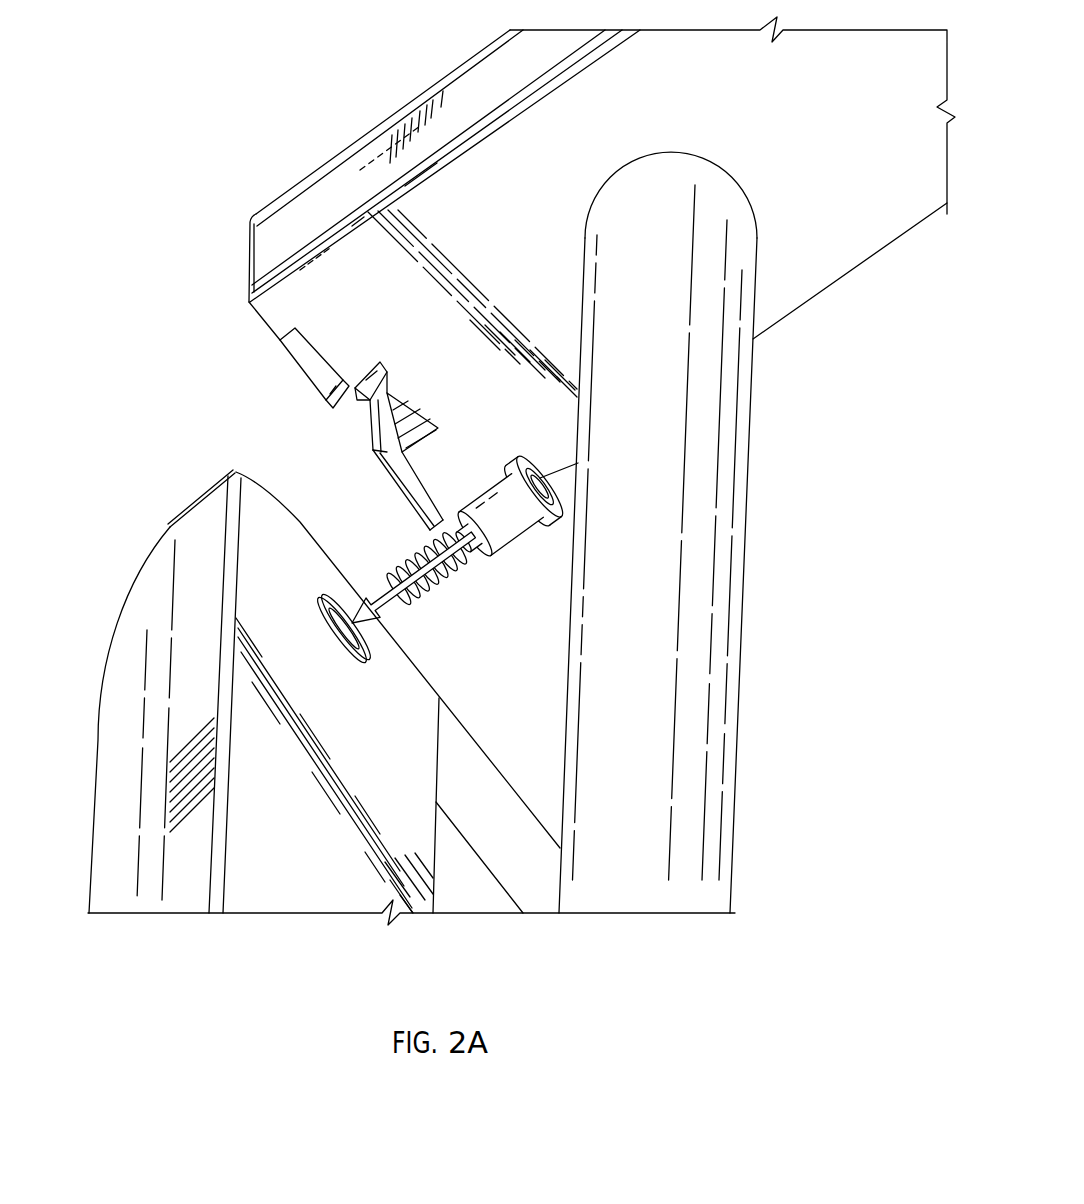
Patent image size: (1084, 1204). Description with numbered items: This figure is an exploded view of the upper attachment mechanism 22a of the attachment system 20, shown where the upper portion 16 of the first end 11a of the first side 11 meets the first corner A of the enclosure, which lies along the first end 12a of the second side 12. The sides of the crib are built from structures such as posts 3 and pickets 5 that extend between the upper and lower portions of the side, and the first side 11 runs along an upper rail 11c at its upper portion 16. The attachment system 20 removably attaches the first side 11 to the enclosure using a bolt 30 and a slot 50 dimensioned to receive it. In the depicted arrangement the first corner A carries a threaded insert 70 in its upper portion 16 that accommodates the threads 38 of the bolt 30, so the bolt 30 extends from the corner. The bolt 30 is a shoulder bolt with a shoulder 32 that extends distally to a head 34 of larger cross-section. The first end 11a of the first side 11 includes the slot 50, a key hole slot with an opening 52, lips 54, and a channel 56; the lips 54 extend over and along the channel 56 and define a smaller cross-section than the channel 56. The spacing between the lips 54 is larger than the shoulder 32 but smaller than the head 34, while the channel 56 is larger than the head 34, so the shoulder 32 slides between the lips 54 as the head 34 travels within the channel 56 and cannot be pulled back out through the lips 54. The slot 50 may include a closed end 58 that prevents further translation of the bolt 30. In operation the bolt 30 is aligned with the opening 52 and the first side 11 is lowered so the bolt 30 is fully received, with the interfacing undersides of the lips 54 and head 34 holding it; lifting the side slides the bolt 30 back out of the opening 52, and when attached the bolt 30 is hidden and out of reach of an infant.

The post 3 is at (100, 825).
The picket 5 is at (735, 650).
The first side 11 is at (745, 490).
The first end 11a is at (240, 265).
The upper rail 11c is at (388, 112).
The second side 12 is at (332, 892).
The first end 12a is at (120, 922).
The upper portion 16 is at (93, 668).
The attachment system 20 is at (186, 350).
The upper attachment mechanism 22a is at (224, 461).
The bolt 30 is at (407, 553).
The shoulder 32 is at (513, 553).
The head 34 is at (557, 540).
The threads 38 is at (445, 608).
The slot 50 is at (335, 412).
The opening 52 is at (352, 413).
The lips 54 is at (378, 425).
The channel 56 is at (418, 415).
The closed end 58 is at (392, 372).
The threaded insert 70 is at (362, 663).
The first corner A is at (166, 555).